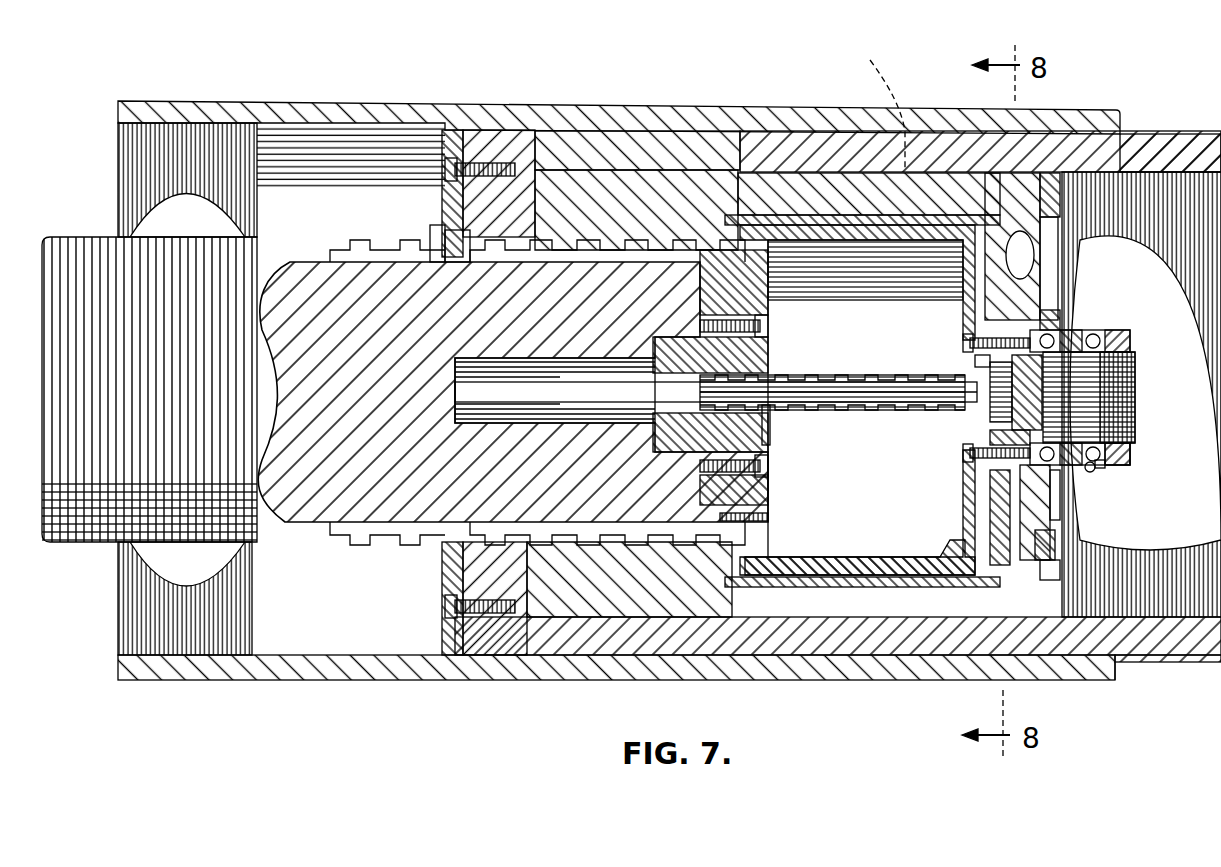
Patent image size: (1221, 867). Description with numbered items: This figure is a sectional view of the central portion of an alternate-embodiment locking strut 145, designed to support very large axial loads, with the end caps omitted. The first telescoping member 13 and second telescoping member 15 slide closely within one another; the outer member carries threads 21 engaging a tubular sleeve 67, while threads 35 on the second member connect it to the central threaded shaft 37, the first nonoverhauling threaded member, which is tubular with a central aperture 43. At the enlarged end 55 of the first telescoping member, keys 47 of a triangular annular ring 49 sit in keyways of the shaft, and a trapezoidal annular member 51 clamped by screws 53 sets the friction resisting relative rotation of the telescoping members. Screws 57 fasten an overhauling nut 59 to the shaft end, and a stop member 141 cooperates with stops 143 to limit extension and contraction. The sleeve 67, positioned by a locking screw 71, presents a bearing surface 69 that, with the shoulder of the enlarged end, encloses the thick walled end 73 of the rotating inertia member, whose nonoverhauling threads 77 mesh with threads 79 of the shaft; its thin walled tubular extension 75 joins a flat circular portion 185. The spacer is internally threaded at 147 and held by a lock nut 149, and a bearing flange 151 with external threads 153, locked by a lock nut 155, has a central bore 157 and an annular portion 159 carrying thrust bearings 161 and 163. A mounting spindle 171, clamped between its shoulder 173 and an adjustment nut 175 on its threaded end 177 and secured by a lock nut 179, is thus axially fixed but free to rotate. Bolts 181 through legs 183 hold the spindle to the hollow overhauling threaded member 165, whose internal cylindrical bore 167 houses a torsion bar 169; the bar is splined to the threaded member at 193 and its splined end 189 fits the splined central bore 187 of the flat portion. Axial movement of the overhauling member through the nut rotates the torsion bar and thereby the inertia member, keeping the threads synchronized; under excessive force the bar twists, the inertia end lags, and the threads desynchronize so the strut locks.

The first telescoping member 13 is at (1170, 134).
The second telescoping member 15 is at (545, 104).
The threads 21 is at (1125, 185).
The threads 35 is at (215, 125).
The central threaded shaft 37 is at (305, 512).
The central aperture 43 is at (580, 410).
The keys 47 is at (455, 242).
The annular ring 49 is at (440, 240).
The annular member 51 is at (448, 625).
The screws 53 is at (440, 165).
The enlarged end 55 is at (505, 128).
The screws 57 is at (768, 327).
The overhauling nut 59 is at (768, 348).
The tubular sleeve 67 is at (930, 185).
The bearing surface 69 is at (720, 225).
The locking screw 71 is at (872, 115).
The thick walled end 73 is at (596, 185).
The thin walled tubular extension 75 is at (800, 215).
The nonoverhauling threads 77 is at (650, 240).
The nonoverhauling threads 79 is at (678, 240).
The stop member 141 is at (768, 517).
The stops 143 is at (950, 560).
The locking strut 145 is at (540, 688).
The internal threads 147 is at (1055, 277).
The lock nut 149 is at (1060, 210).
The bearing flange 151 is at (1040, 520).
The external threads 153 is at (1050, 568).
The lock nut 155 is at (1050, 545).
The central bore 157 is at (1050, 362).
The annular portion 159 is at (1060, 318).
The thrust bearing 161 is at (1055, 500).
The thrust bearing 163 is at (1110, 468).
The overhauling threaded member 165 is at (830, 380).
The internal cylindrical bore 167 is at (862, 382).
The torsion bar 169 is at (880, 388).
The mounting spindle 171 is at (1090, 398).
The shoulder 173 is at (975, 360).
The adjustment nut 175 is at (1090, 470).
The threaded end 177 is at (1130, 410).
The lock nut 179 is at (1105, 463).
The bolts 181 is at (965, 345).
The legs 183 is at (995, 440).
The flat circular portion 185 is at (1000, 505).
The central bore 187 is at (1020, 378).
The splined end 189 is at (1000, 398).
The spline 193 is at (770, 412).